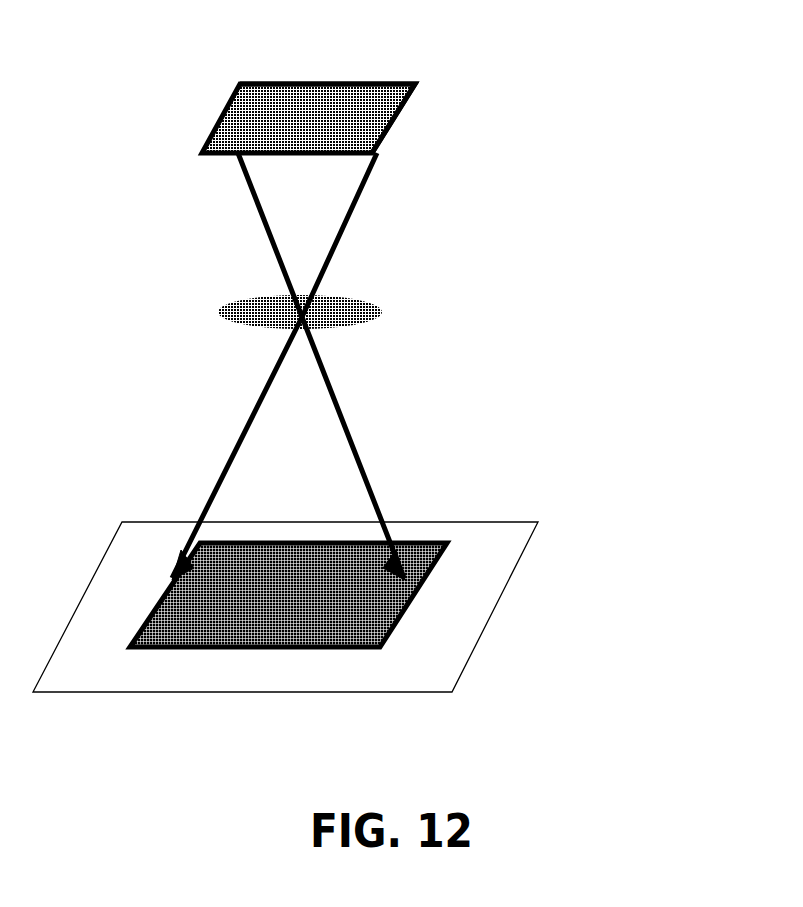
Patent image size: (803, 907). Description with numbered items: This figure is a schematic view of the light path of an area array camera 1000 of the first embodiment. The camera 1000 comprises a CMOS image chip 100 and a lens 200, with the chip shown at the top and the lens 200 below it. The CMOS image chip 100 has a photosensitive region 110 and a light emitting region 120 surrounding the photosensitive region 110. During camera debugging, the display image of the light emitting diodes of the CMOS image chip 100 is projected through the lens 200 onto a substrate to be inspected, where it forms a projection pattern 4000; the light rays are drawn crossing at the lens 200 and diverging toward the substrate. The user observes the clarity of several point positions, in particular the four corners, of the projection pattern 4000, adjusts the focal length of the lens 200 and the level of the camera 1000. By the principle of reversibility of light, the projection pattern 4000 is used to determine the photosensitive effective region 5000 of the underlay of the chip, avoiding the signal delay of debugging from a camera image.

The CMOS image chip 100 is at (484, 23).
The photosensitive region 110 is at (320, 107).
The light emitting region 120 is at (408, 84).
The lens 200 is at (367, 300).
The camera 1000 is at (550, 37).
The projection pattern 4000 is at (415, 597).
The photosensitive effective region 5000 is at (313, 648).